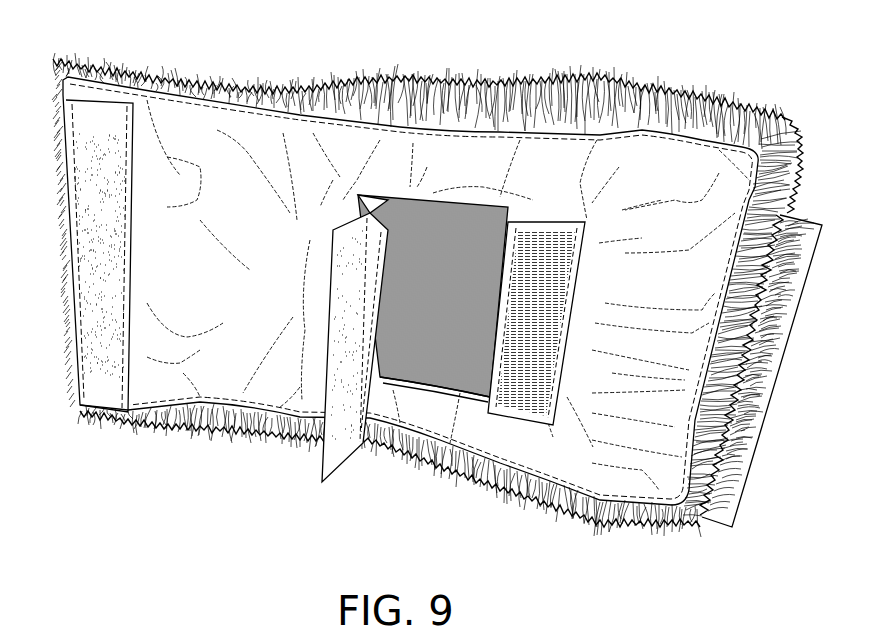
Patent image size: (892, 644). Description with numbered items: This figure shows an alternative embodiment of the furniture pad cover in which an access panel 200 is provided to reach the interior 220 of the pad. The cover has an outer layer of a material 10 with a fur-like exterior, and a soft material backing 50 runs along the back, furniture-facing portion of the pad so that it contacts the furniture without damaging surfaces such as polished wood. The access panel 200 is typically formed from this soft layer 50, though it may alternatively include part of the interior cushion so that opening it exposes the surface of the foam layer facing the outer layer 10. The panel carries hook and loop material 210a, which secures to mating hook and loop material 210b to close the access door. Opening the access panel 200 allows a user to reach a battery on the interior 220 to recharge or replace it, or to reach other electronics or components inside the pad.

The outer layer of material 10 is at (493, 100).
The soft material backing 50 is at (668, 165).
The access panel 200 is at (357, 193).
The hook and loop material 210a is at (348, 458).
The hook and loop material 210b is at (504, 415).
The interior of the pad 220 is at (430, 388).